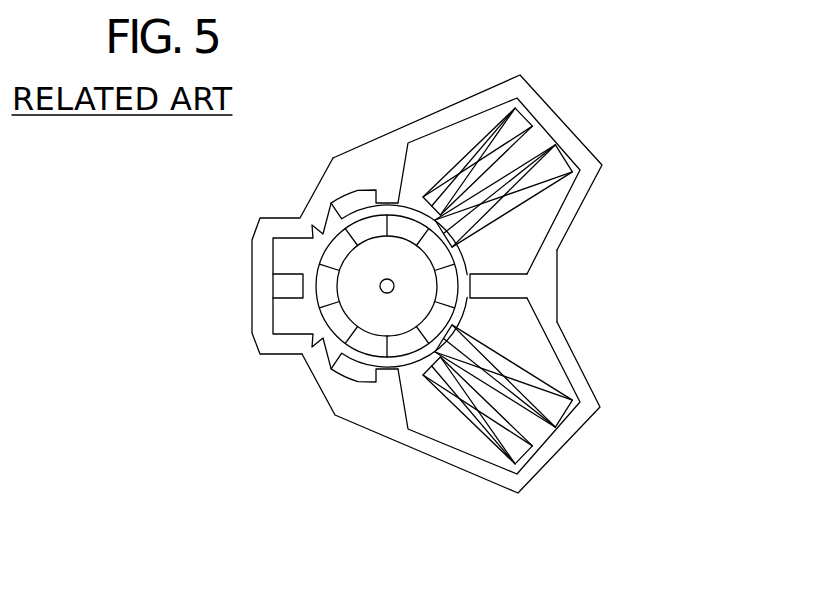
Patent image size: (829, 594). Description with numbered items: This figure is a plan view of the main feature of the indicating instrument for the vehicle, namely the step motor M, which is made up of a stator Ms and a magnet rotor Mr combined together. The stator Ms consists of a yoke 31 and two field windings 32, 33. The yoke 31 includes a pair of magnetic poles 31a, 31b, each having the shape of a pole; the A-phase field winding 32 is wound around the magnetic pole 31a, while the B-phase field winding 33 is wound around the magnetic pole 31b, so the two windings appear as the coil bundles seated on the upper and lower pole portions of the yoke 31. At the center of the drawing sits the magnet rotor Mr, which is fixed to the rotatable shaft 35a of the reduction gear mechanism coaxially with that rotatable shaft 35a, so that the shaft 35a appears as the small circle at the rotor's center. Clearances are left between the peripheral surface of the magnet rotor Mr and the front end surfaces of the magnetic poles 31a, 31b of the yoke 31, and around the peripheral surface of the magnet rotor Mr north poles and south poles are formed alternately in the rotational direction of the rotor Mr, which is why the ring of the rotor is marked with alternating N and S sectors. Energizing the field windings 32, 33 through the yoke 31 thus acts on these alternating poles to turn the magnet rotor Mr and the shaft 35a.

The step motor M is at (623, 148).
The stator Ms is at (458, 88).
The magnet rotor Mr is at (358, 214).
The yoke 31 is at (578, 218).
The magnetic pole 31a is at (537, 142).
The magnetic pole 31b is at (537, 428).
The A-phase field winding 32 is at (517, 122).
The B-phase field winding 33 is at (518, 357).
The rotatable shaft 35a is at (386, 293).